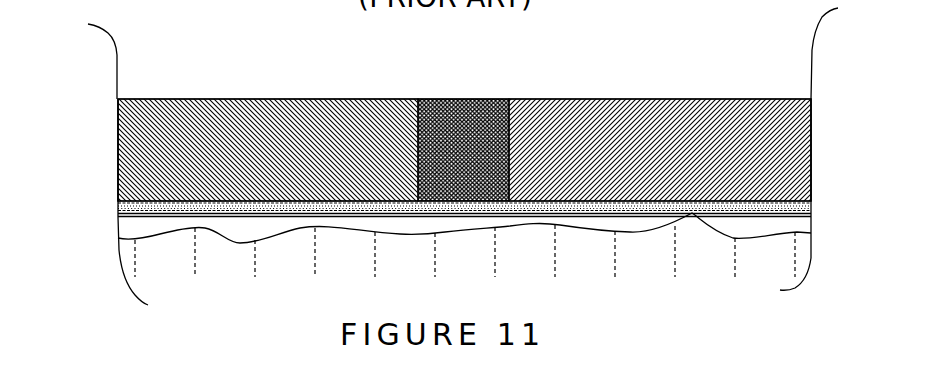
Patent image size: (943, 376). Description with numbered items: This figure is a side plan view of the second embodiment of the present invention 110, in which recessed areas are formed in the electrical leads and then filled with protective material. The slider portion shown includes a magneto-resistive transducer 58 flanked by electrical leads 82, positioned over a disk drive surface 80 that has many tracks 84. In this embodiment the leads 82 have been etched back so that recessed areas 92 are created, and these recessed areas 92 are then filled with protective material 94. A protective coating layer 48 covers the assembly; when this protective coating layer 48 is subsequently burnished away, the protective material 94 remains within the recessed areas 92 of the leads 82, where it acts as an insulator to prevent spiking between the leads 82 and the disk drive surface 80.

The second embodiment 110 is at (222, 72).
The electrical leads 82 is at (339, 112).
The magneto-resistive transducer 58 is at (466, 108).
The recessed areas 92 is at (456, 155).
The protective material 94 is at (107, 202).
The protective coating layer 48 is at (148, 218).
The disk drive surface 80 is at (240, 275).
The tracks 84 is at (729, 255).